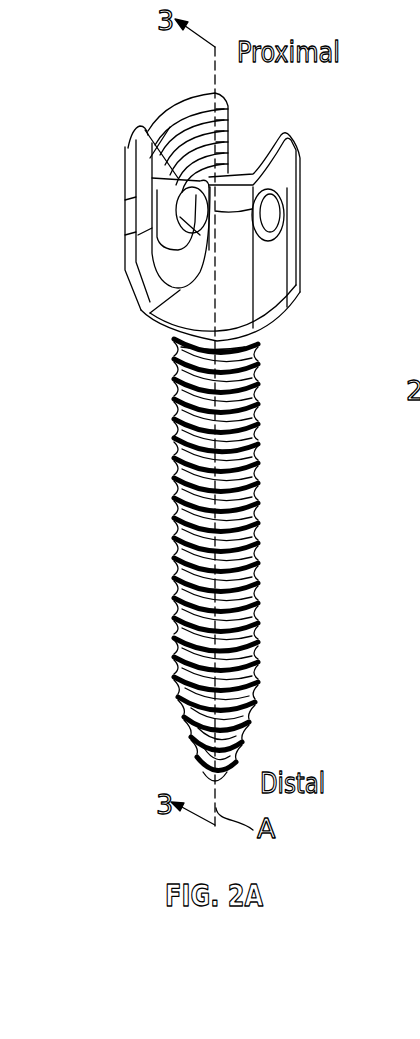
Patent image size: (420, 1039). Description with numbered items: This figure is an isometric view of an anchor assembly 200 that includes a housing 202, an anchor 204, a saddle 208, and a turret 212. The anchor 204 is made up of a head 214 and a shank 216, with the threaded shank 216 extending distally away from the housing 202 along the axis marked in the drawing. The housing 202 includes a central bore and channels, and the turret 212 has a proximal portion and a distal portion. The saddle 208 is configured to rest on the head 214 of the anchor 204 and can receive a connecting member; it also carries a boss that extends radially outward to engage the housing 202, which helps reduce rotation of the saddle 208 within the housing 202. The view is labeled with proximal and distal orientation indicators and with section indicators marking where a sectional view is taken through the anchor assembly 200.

The anchor assembly 200 is at (111, 149).
The housing 202 is at (303, 216).
The anchor 204 is at (140, 494).
The saddle 208 is at (150, 138).
The turret 212 is at (148, 332).
The head 214 is at (256, 344).
The shank 216 is at (255, 652).